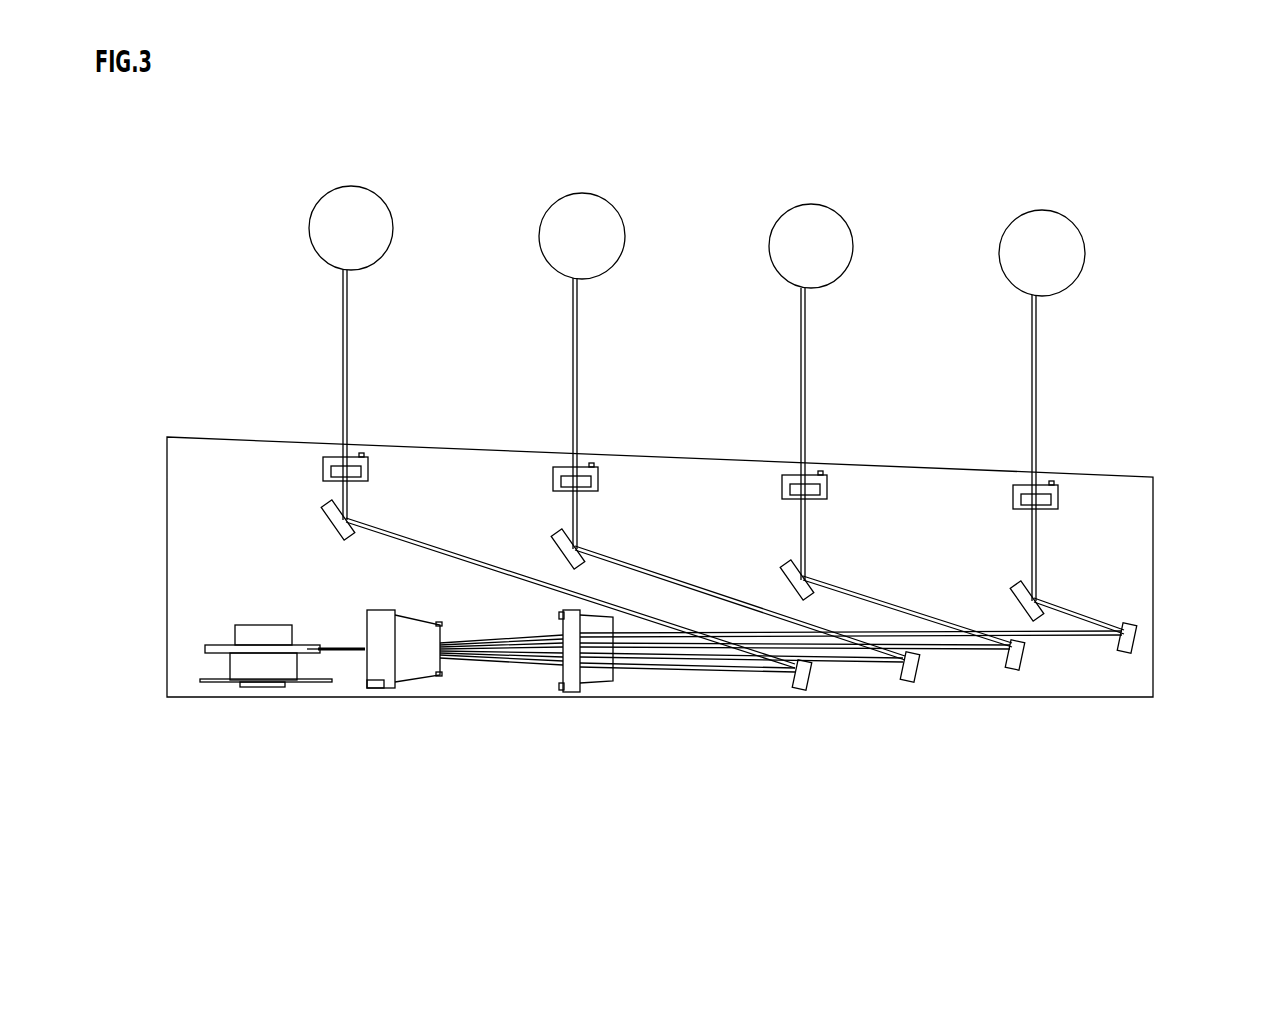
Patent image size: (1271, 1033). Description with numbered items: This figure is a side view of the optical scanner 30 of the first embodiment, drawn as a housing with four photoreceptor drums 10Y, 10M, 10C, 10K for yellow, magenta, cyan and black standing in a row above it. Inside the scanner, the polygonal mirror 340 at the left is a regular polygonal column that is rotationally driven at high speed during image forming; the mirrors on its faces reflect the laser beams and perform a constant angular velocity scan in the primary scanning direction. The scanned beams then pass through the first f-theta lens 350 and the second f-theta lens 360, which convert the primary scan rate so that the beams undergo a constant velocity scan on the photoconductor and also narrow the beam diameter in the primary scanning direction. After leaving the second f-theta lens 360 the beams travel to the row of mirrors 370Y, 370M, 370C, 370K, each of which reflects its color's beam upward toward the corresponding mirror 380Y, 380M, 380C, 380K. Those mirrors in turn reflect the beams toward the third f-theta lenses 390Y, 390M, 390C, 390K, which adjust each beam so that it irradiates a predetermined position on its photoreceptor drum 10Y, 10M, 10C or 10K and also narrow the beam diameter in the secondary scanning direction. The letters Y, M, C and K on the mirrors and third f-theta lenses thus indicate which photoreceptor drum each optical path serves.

The optical scanner 30 is at (1178, 445).
The photoreceptor drum (yellow) 10Y is at (358, 208).
The photoreceptor drum (magenta) 10M is at (590, 223).
The photoreceptor drum (cyan) 10C is at (825, 233).
The photoreceptor drum (black) 10K is at (1058, 242).
The polygonal mirror 340 is at (258, 648).
The first f-theta lens 350 is at (415, 650).
The second f-theta lens 360 is at (600, 650).
The mirror (yellow) 370Y is at (792, 687).
The mirror (magenta) 370M is at (898, 684).
The mirror (cyan) 370C is at (1007, 672).
The mirror (black) 370K is at (1117, 653).
The mirror (yellow) 380Y is at (342, 515).
The mirror (magenta) 380M is at (570, 547).
The mirror (cyan) 380C is at (802, 577).
The mirror (black) 380K is at (1032, 597).
The third f-theta lens (yellow) 390Y is at (337, 472).
The third f-theta lens (magenta) 390M is at (568, 482).
The third f-theta lens (cyan) 390C is at (800, 487).
The third f-theta lens (black) 390K is at (1027, 502).